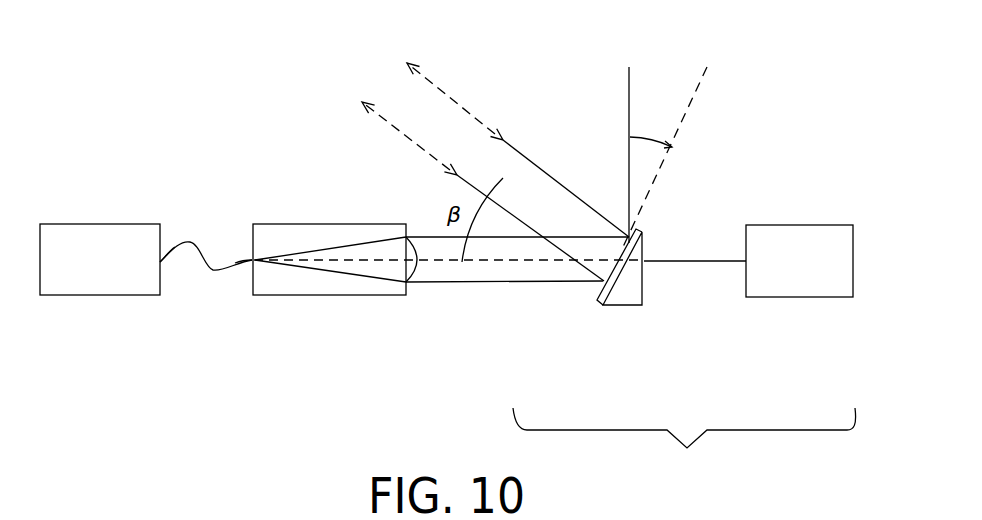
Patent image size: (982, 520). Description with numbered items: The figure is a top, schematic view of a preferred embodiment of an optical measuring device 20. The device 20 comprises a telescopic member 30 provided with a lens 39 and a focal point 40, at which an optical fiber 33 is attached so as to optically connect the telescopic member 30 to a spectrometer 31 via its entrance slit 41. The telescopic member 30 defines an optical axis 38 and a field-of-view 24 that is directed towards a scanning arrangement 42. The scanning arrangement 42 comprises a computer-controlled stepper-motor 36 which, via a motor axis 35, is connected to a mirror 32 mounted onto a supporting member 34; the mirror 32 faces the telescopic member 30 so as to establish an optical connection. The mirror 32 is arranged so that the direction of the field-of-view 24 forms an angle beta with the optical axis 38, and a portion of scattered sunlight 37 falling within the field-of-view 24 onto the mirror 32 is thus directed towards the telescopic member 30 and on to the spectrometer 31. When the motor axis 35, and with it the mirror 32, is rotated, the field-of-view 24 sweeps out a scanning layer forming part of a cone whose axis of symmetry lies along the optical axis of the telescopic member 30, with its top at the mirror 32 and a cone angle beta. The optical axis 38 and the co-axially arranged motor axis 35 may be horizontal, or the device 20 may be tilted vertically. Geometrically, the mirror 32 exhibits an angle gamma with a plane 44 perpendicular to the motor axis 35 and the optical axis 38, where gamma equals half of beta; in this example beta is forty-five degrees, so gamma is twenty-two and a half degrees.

The optical measuring device 20 is at (253, 132).
The field-of-view 24 is at (443, 127).
The telescopic member 30 is at (337, 300).
The spectrometer 31 is at (108, 283).
The mirror 32 is at (603, 287).
The optical fiber 33 is at (213, 272).
The supporting member 34 is at (620, 297).
The motor axis 35 is at (720, 263).
The computer-controlled stepper-motor 36 is at (800, 283).
The scattered sunlight 37 is at (453, 181).
The optical axis 38 is at (430, 237).
The lens 39 is at (412, 284).
The focal point 40 is at (248, 262).
The entrance slit 41 is at (160, 263).
The scanning arrangement 42 is at (684, 447).
The plane perpendicular to the motor axis 44 is at (629, 88).